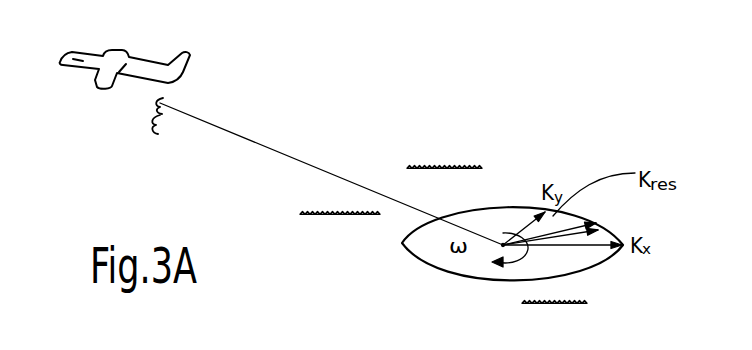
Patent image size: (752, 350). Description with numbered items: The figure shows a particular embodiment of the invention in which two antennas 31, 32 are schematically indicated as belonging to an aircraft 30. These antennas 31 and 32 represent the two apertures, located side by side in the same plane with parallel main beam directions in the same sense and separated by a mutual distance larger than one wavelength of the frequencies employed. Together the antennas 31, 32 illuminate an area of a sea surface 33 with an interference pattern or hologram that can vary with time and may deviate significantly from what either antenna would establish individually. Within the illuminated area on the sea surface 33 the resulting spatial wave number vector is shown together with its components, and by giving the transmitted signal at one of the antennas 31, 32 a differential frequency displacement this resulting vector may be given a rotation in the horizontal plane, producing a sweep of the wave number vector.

The aircraft 30 is at (145, 60).
The antenna 31 is at (163, 100).
The antenna 32 is at (153, 130).
The sea surface 33 is at (472, 152).